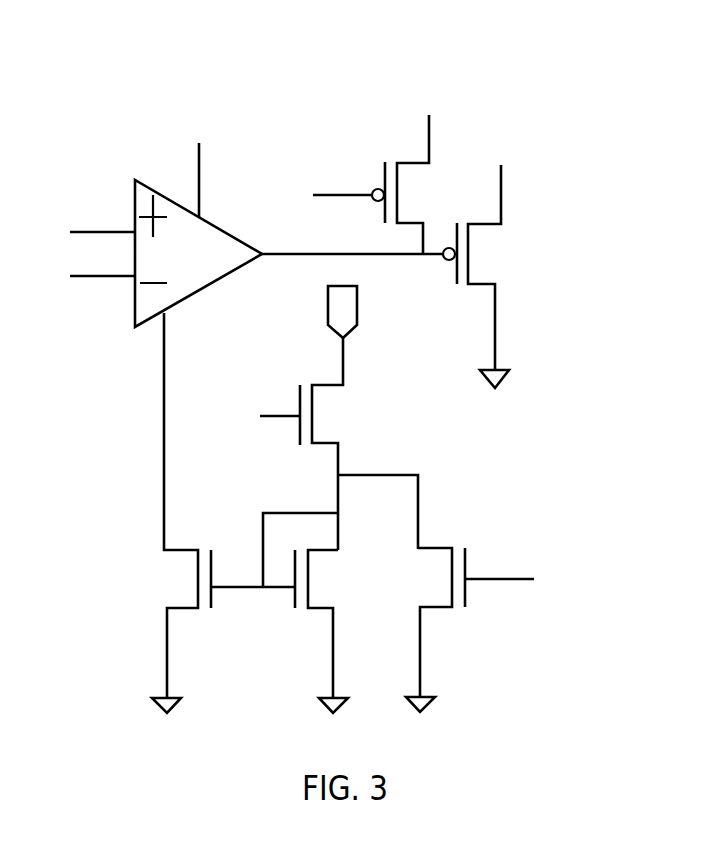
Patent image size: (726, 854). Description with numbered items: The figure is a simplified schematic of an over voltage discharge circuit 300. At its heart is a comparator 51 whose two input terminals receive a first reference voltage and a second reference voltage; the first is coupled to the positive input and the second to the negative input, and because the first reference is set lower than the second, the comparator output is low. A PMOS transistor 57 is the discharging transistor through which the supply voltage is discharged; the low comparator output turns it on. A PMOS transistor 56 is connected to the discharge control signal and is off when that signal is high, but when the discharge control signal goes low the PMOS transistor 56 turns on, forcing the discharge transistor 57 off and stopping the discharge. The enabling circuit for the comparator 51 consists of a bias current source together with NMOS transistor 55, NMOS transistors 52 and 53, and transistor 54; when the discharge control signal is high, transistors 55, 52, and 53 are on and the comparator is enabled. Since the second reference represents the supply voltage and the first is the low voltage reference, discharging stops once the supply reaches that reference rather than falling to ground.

The over voltage discharge circuit 300 is at (626, 58).
The comparator 51 is at (118, 308).
The NMOS transistor 52 is at (155, 591).
The NMOS transistor 53 is at (295, 626).
The transistor 54 is at (478, 598).
The NMOS transistor 55 is at (340, 402).
The PMOS transistor 56 is at (360, 210).
The PMOS transistor 57 is at (450, 297).